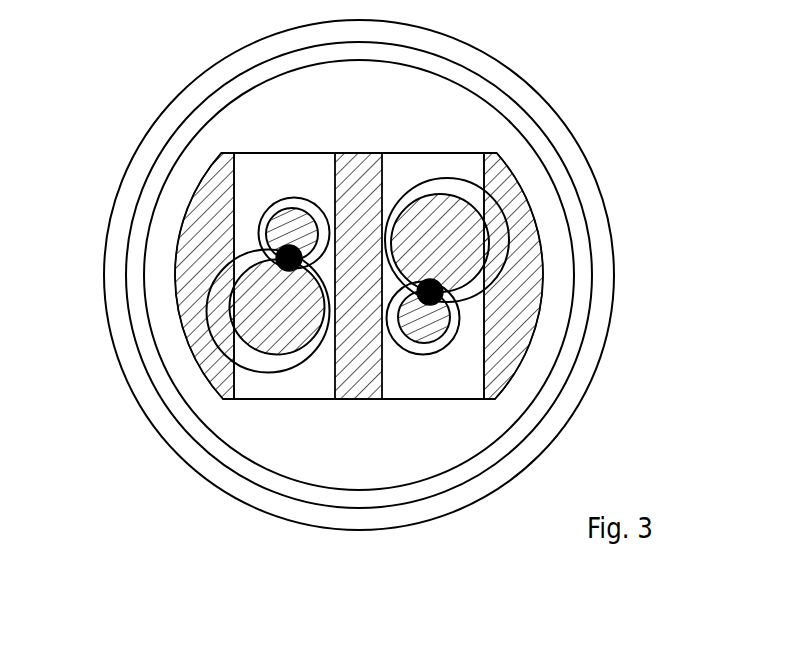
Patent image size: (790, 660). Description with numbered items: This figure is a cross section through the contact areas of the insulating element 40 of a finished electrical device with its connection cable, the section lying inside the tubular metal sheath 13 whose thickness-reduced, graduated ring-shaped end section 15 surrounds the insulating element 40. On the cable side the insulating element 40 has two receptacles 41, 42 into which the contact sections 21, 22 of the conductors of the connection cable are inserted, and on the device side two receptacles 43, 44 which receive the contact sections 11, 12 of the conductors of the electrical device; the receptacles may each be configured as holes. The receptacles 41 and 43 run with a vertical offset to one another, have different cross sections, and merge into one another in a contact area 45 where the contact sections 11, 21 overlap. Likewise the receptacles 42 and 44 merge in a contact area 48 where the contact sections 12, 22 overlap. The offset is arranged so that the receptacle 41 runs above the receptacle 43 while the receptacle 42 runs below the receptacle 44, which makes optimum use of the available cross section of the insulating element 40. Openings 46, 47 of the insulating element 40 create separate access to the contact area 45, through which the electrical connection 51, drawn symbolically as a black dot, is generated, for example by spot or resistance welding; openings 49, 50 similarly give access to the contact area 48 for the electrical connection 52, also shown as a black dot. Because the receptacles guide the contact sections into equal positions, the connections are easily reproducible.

The contact section 11 is at (437, 323).
The contact section 12 is at (285, 228).
The tubular metal sheath 13 is at (598, 182).
The ring-shaped end section 15 is at (582, 252).
The contact section 21 is at (467, 230).
The contact section 22 is at (258, 333).
The insulating element 40 is at (525, 332).
The receptacle 41 is at (475, 198).
The receptacle 42 is at (252, 362).
The receptacle 43 is at (440, 343).
The receptacle 44 is at (277, 212).
The contact area 45 is at (438, 383).
The opening 46 is at (427, 163).
The opening 47 is at (432, 400).
The contact area 48 is at (327, 388).
The opening 49 is at (278, 150).
The opening 50 is at (285, 390).
The electrical connection 51 is at (442, 295).
The electrical connection 52 is at (275, 255).